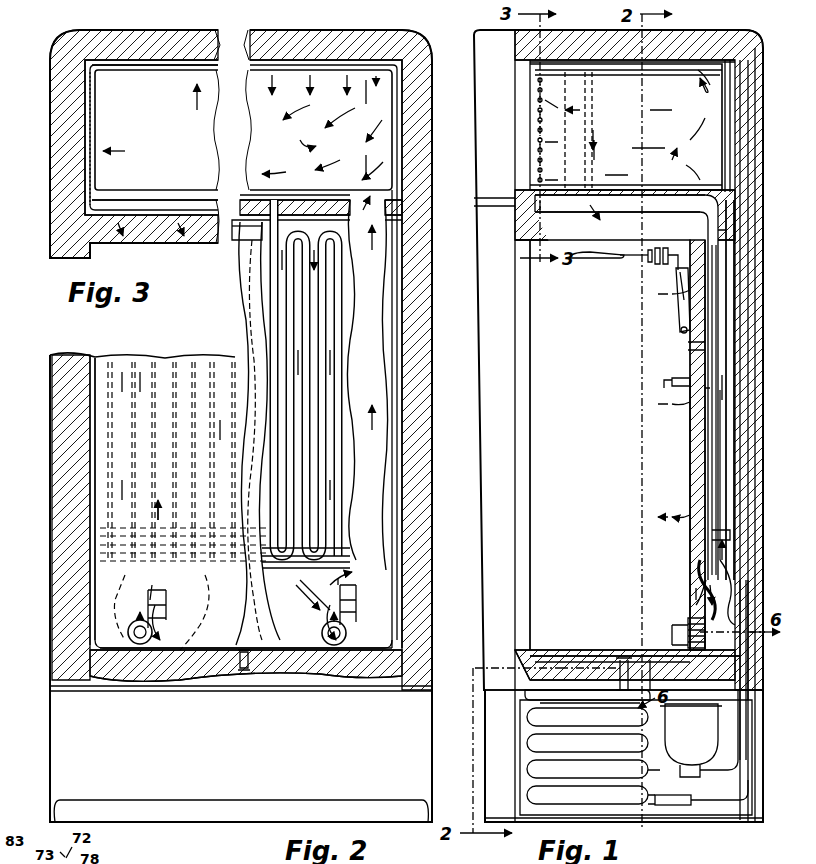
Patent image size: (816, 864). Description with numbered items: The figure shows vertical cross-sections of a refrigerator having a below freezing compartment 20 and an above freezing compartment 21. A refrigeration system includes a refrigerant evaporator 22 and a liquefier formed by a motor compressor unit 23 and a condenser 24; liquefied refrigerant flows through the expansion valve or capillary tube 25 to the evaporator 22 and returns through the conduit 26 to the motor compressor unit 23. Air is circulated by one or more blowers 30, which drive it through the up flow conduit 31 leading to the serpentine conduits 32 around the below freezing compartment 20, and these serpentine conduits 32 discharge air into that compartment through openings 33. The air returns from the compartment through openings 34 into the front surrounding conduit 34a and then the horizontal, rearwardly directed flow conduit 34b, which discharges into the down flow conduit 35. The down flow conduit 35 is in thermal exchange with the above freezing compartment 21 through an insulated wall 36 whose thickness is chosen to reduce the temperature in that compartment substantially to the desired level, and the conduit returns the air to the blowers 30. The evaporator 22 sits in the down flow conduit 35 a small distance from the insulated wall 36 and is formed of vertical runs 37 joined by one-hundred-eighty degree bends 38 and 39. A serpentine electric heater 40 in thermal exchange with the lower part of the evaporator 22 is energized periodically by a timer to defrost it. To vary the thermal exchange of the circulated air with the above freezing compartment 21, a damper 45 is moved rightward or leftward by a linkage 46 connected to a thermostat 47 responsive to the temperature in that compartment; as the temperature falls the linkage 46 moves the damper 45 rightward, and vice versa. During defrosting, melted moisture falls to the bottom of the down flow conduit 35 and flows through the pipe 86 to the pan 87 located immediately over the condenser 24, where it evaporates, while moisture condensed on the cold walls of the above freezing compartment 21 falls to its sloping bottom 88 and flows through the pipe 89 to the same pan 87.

In FIG. 3, the below freezing compartment 20 is at (172, 140).
In FIG. 2, the below freezing compartment 20 is at (314, 140).
In FIG. 1, the below freezing compartment 20 is at (636, 138).
In FIG. 3, the above freezing compartment 21 is at (183, 246).
In FIG. 2, the above freezing compartment 21 is at (200, 380).
In FIG. 1, the above freezing compartment 21 is at (602, 462).
In FIG. 2, the refrigerant evaporator 22 is at (328, 378).
In FIG. 1, the refrigerant evaporator 22 is at (710, 428).
In FIG. 1, the motor compressor unit 23 is at (678, 730).
In FIG. 1, the condenser 24 is at (645, 770).
In FIG. 1, the expansion valve or capillary tube 25 is at (656, 804).
In FIG. 1, the conduit 26 is at (720, 770).
In FIG. 2, the blowers 30 is at (128, 631).
In FIG. 1, the blowers 30 is at (688, 630).
In FIG. 2, the up flow conduit 31 is at (377, 312).
In FIG. 1, the up flow conduit 31 is at (724, 266).
In FIG. 2, the serpentine conduits 32 is at (361, 68).
In FIG. 1, the serpentine conduits 32 is at (680, 70).
In FIG. 2, the openings 33 is at (372, 74).
In FIG. 3, the openings 34 is at (92, 118).
In FIG. 1, the openings 34 is at (542, 145).
In FIG. 3, the front surrounding conduit 34a is at (105, 66).
In FIG. 1, the front surrounding conduit 34a is at (568, 70).
In FIG. 3, the horizontal rearwardly directed flow conduit 34b is at (62, 214).
In FIG. 1, the horizontal rearwardly directed flow conduit 34b is at (656, 212).
In FIG. 1, the down flow conduit 35 is at (714, 402).
In FIG. 2, the insulated wall 36 is at (280, 620).
In FIG. 1, the insulated wall 36 is at (695, 436).
In FIG. 2, the vertical runs 37 is at (344, 452).
In FIG. 2, the 180° bends 38 is at (330, 562).
In FIG. 2, the 180° bends 39 is at (260, 225).
In FIG. 2, the serpentine electric heater 40 is at (330, 556).
In FIG. 1, the serpentine electric heater 40 is at (716, 538).
In FIG. 1, the damper 45 is at (695, 358).
In FIG. 1, the linkage 46 is at (682, 300).
In FIG. 1, the thermostat 47 is at (663, 267).
In FIG. 2, the pipe 86 is at (214, 623).
In FIG. 1, the pan 87 is at (580, 698).
In FIG. 2, the sloping bottom 88 is at (210, 655).
In FIG. 1, the sloping bottom 88 is at (582, 650).
In FIG. 2, the pipe 89 is at (243, 670).
In FIG. 1, the pipe 89 is at (624, 660).